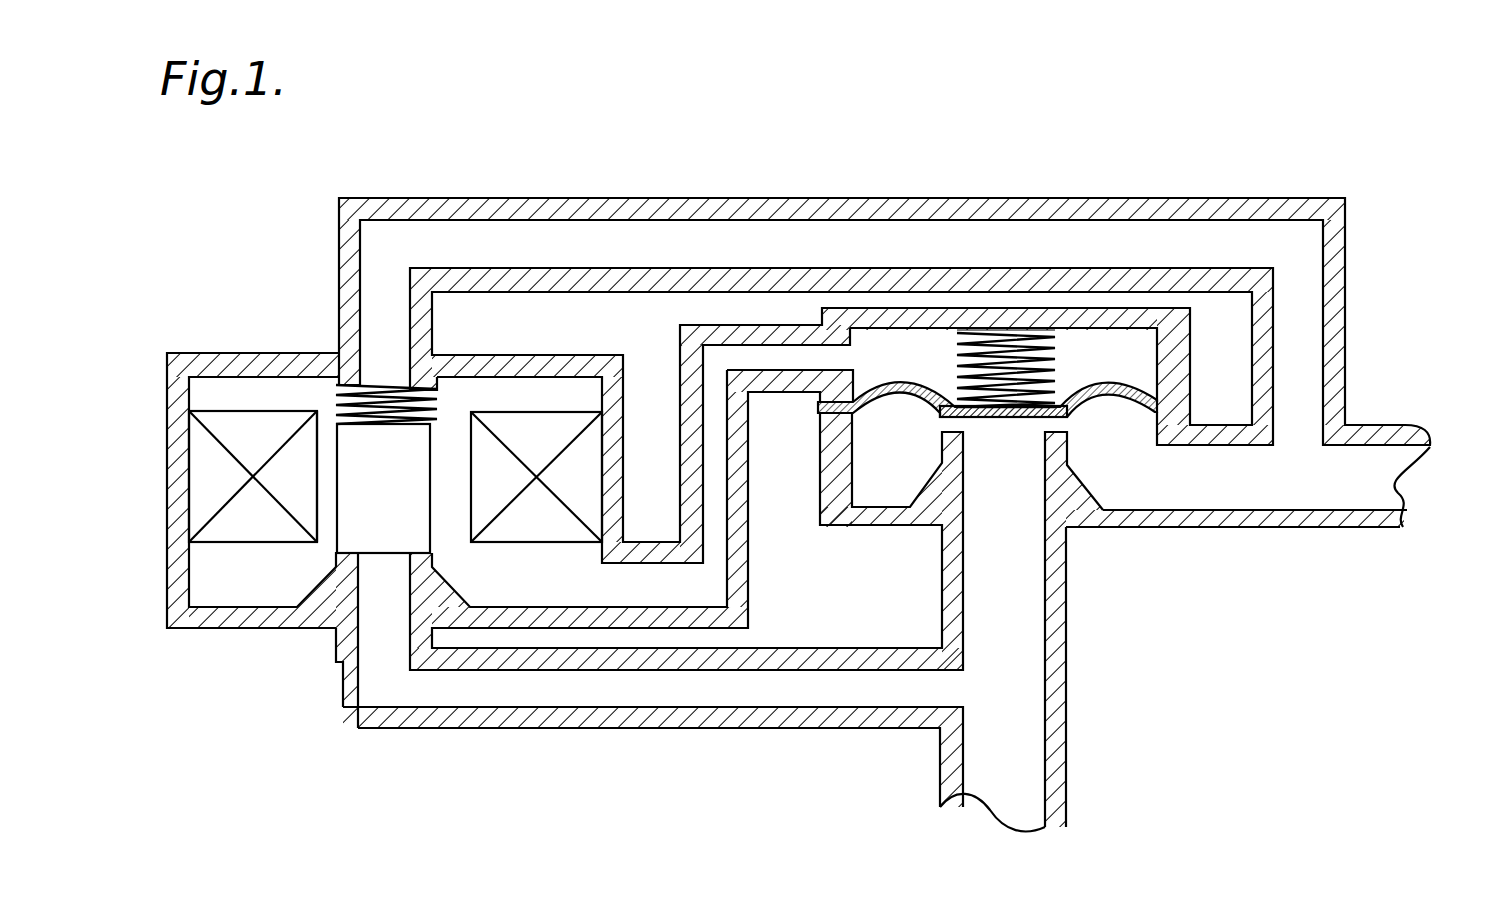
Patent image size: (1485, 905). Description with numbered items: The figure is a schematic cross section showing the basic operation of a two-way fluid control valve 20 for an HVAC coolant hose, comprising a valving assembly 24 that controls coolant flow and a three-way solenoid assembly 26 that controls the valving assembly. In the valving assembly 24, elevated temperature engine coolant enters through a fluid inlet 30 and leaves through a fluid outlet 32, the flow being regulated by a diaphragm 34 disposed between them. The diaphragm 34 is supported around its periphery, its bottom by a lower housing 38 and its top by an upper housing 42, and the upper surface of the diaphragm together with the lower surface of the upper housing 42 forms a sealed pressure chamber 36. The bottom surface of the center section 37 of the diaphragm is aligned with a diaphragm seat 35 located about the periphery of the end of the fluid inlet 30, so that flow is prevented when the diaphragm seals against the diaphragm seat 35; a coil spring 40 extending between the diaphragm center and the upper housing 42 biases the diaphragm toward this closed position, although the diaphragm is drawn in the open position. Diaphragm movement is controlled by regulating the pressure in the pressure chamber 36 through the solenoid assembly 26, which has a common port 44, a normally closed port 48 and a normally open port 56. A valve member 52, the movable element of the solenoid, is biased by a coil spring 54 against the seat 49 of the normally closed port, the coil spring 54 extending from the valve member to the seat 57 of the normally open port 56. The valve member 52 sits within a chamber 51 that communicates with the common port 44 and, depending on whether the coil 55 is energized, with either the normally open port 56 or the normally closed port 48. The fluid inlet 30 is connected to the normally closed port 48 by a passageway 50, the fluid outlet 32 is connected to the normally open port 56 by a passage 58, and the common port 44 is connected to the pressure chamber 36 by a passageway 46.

The two-way fluid control valve 20 is at (1215, 147).
The valving assembly 24 is at (913, 303).
The three-way solenoid assembly 26 is at (158, 541).
The fluid inlet 30 is at (1013, 738).
The fluid outlet 32 is at (1343, 465).
The diaphragm 34 is at (1147, 397).
The diaphragm seat 35 is at (1063, 457).
The pressure chamber 36 is at (1140, 335).
The center section 37 is at (1067, 427).
The lower housing 38 is at (1100, 527).
The coil spring 40 is at (1030, 333).
The upper housing 42 is at (987, 317).
The common port 44 is at (658, 588).
The passageway 46 is at (755, 568).
The normally closed port 48 is at (375, 660).
The seat of the normally closed port 49 is at (345, 580).
The passageway 50 is at (833, 710).
The chamber 51 is at (326, 487).
The valve member 52 is at (355, 540).
The coil spring 54 is at (337, 395).
The coil 55 is at (217, 468).
The normally open port 56 is at (375, 322).
The seat of the normally open port 57 is at (417, 373).
The passage 58 is at (487, 210).